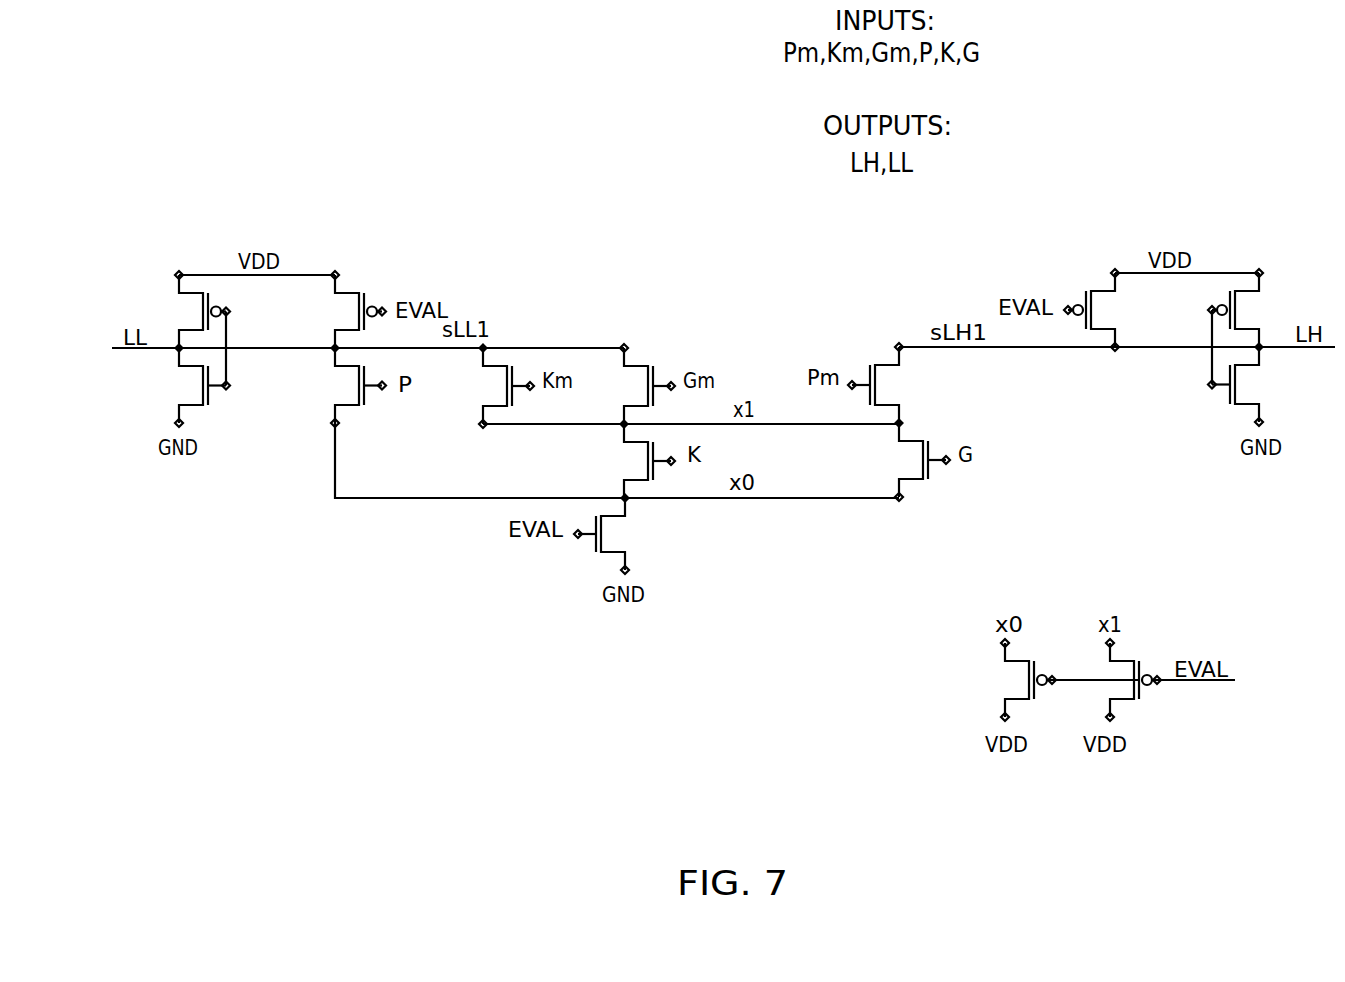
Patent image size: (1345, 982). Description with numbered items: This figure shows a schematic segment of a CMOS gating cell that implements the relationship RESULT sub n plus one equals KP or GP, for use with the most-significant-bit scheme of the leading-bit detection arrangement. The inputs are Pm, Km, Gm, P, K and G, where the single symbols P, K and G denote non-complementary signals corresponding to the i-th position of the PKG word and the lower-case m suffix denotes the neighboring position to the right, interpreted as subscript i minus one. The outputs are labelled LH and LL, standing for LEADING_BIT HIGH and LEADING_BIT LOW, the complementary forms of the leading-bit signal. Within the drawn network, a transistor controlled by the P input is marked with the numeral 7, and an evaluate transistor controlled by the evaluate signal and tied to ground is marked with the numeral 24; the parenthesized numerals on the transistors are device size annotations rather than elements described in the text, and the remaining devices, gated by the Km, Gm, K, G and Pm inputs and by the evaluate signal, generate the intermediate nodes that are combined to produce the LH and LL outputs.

The NMOS transistor controlled by P 7 is at (353, 385).
The NMOS evaluate transistor 24 is at (613, 534).